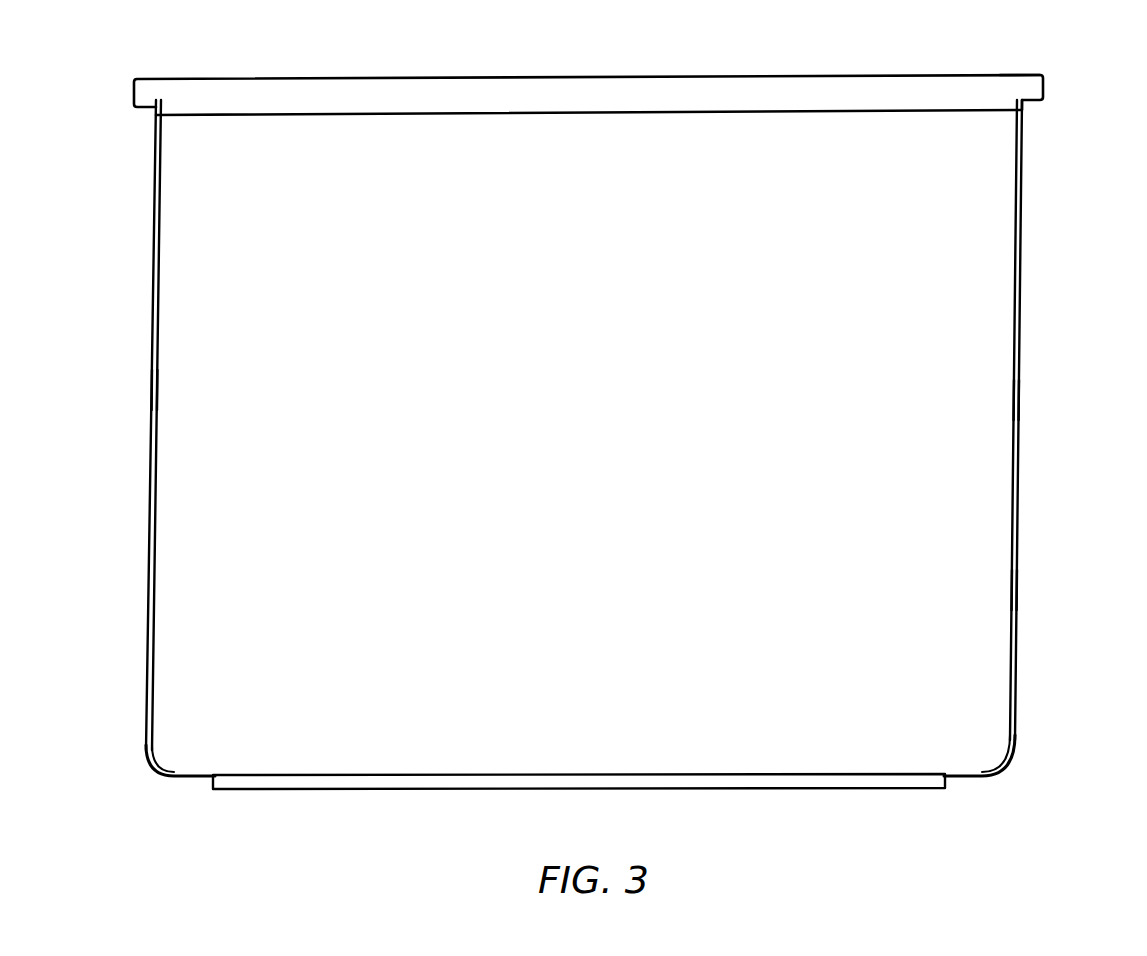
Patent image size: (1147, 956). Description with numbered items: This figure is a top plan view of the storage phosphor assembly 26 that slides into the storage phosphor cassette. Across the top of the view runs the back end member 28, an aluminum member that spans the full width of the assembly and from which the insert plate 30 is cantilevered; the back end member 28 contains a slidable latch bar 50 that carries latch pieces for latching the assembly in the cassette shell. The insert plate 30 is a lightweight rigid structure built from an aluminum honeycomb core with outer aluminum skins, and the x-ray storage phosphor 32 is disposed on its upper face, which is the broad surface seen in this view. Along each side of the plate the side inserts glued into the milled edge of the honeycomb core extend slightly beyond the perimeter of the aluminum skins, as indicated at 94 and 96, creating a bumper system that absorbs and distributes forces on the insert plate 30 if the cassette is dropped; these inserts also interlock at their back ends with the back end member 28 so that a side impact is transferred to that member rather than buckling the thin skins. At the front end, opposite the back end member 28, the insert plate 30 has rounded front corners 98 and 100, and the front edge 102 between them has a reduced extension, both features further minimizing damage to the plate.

The storage phosphor assembly 26 is at (1024, 598).
The back end member 28 is at (477, 77).
The insert plate 30 is at (172, 500).
The x-ray storage phosphor 32 is at (960, 520).
The latch bar 50 is at (993, 70).
The side insert extension 94 is at (146, 390).
The side insert extension 96 is at (1024, 400).
The rounded front corner 98 is at (160, 772).
The rounded front corner 100 is at (1000, 770).
The front edge 102 is at (387, 790).